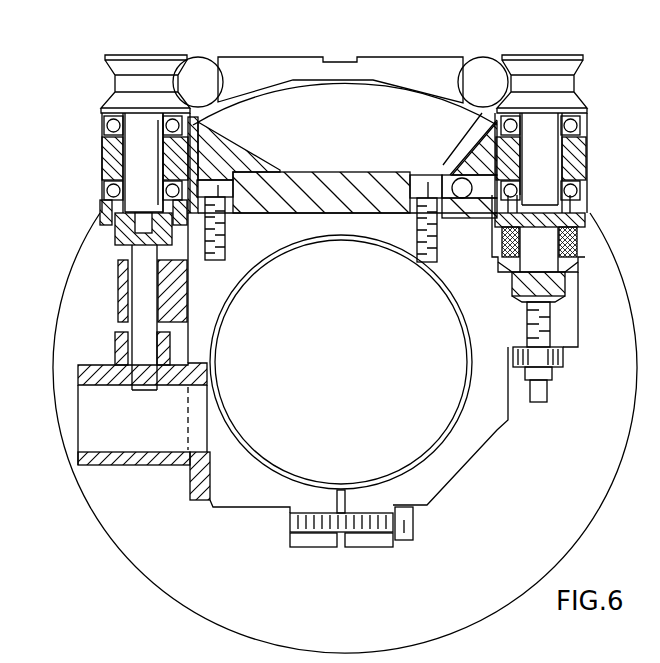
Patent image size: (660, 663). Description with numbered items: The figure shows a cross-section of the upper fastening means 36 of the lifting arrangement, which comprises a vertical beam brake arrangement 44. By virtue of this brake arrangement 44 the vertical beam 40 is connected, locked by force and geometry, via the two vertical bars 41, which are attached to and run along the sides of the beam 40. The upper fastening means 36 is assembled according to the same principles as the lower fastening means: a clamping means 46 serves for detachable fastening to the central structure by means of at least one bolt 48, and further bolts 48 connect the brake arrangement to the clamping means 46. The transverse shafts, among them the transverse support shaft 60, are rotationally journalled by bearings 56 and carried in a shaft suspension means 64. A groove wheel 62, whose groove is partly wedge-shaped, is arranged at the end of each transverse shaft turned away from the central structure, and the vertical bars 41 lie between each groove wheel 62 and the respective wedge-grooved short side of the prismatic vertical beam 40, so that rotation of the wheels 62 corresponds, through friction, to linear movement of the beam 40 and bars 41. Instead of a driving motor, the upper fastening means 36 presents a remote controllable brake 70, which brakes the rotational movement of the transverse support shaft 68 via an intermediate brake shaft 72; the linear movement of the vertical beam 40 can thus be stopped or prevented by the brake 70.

The upper fastening means 36 is at (475, 486).
The vertical beam 40 is at (424, 62).
The vertical bars 41 is at (199, 68).
The vertical beam brake arrangement 44 is at (167, 509).
The clamping means 46 is at (488, 418).
The bolt 48 is at (214, 178).
The bearings 56 is at (110, 125).
The transverse support shaft 60 is at (550, 147).
The groove wheel 62 is at (123, 68).
The shaft suspension means 64 is at (348, 174).
The transverse support shaft 68 is at (128, 150).
The brake 70 is at (125, 441).
The intermediate brake shaft 72 is at (140, 290).